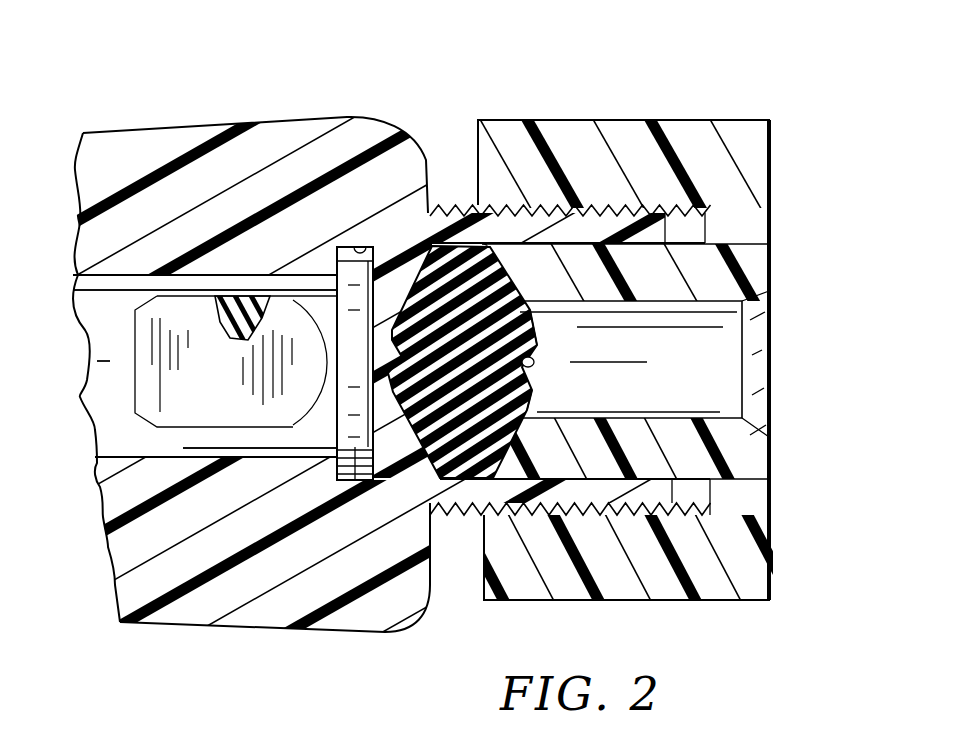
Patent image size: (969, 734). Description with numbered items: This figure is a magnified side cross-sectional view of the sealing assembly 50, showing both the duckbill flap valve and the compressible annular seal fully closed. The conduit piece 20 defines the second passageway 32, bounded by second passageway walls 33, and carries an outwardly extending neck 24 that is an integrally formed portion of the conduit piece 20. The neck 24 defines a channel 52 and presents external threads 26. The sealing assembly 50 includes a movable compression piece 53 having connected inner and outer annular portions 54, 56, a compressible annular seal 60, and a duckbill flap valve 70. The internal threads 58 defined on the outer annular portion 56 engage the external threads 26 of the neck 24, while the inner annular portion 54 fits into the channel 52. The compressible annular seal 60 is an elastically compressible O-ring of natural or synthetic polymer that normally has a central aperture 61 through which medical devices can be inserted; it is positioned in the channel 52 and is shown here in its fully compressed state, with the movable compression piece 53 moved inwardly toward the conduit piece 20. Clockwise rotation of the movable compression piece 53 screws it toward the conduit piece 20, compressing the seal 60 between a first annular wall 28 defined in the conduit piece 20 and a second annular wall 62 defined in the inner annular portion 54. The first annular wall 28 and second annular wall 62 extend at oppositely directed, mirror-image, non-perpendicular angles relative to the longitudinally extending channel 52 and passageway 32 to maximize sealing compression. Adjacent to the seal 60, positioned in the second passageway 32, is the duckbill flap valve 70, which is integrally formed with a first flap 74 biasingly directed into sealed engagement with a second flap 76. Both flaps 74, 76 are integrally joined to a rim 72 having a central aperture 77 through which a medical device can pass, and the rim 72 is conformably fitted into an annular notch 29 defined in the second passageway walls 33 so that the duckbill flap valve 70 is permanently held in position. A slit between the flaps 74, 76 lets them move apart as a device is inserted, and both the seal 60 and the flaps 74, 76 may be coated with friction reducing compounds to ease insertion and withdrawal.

The conduit piece 20 is at (148, 108).
The outwardly extending neck 24 is at (458, 130).
The external threads 26 is at (440, 515).
The first annular wall 28 is at (465, 208).
The annular notch 29 is at (360, 250).
The second passageway 32 is at (97, 377).
The second passageway walls 33 is at (75, 347).
The sealing assembly 50 is at (690, 88).
The channel 52 is at (700, 343).
The movable compression piece 53 is at (677, 607).
The inner annular portion 54 is at (738, 265).
The outer annular portion 56 is at (718, 172).
The internal threads 58 is at (610, 207).
The compressible annular seal 60 is at (546, 375).
The central aperture 61 is at (530, 363).
The second annular wall 62 is at (537, 332).
The duckbill flap valve 70 is at (143, 427).
The rim 72 is at (356, 482).
The first flap 74 is at (138, 398).
The second flap 76 is at (217, 321).
The central aperture 77 is at (247, 323).